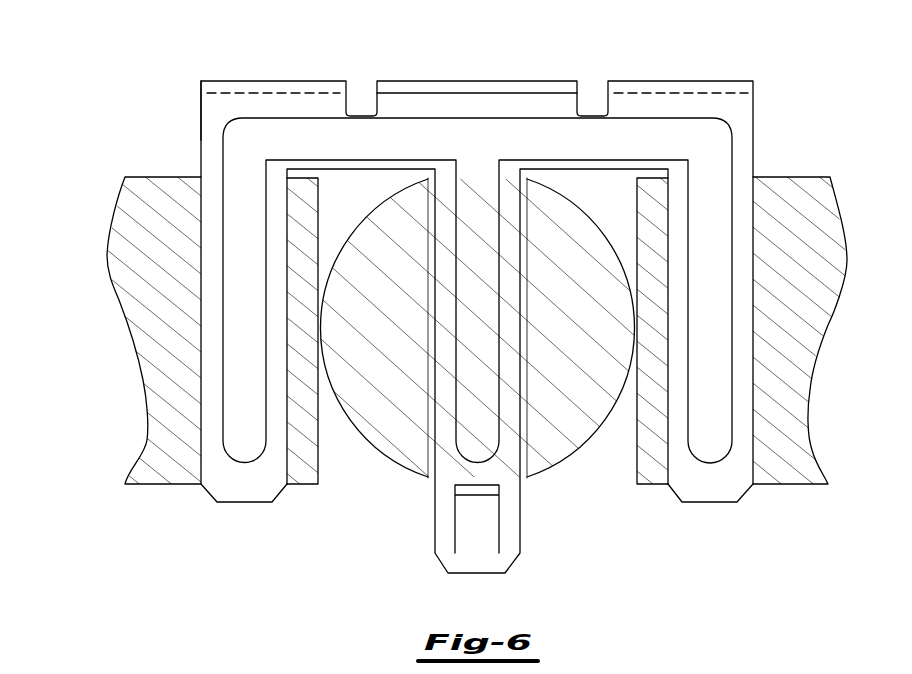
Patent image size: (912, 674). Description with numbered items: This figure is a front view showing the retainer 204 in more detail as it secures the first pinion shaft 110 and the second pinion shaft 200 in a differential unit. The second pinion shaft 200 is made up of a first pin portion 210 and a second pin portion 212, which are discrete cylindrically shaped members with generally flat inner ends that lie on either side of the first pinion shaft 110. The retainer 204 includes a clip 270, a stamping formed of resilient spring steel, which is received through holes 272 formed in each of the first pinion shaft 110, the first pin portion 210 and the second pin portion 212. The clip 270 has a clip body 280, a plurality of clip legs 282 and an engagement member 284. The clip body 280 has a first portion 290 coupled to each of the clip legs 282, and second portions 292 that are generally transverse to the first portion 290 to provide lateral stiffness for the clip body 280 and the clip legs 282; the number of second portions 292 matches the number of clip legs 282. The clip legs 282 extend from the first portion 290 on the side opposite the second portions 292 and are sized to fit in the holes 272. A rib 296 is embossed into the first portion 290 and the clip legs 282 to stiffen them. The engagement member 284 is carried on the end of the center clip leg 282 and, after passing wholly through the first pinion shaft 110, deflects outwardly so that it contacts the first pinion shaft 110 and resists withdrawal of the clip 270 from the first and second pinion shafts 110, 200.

The first pinion shaft 110 is at (395, 435).
The second pinion shaft 200 is at (822, 202).
The retainer 204 is at (763, 73).
The first pin portion 210 is at (793, 395).
The second pin portion 212 is at (160, 358).
The clip 270 is at (735, 110).
The holes 272 is at (523, 402).
The clip body 280 is at (218, 111).
The clip legs 282 is at (743, 442).
The engagement member 284 is at (485, 533).
The first portion 290 is at (412, 107).
The second portions 292 is at (272, 86).
The rib 296 is at (718, 302).